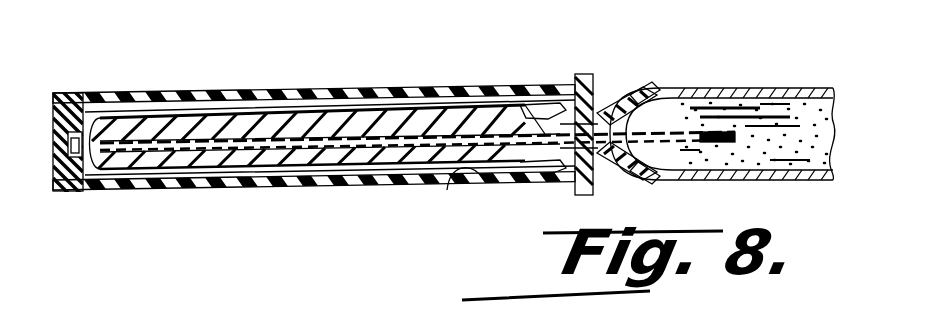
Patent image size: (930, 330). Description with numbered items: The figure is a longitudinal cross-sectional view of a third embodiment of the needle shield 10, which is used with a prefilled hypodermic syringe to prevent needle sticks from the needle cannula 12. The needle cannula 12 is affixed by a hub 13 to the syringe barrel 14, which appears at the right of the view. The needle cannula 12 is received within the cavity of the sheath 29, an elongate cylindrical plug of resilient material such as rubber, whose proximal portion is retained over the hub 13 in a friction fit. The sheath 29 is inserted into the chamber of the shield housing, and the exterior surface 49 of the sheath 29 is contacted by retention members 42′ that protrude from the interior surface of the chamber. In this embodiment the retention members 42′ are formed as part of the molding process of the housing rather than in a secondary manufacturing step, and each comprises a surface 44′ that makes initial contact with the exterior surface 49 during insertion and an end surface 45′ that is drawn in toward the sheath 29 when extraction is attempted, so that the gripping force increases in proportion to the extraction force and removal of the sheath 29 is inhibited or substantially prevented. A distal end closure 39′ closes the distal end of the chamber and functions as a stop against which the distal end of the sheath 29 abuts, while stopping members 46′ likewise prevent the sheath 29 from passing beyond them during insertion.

The needle shield 10 is at (323, 193).
The needle cannula 12 is at (518, 100).
The hub 13 is at (634, 94).
The syringe barrel 14 is at (736, 90).
The sheath 29 is at (398, 97).
The distal end closure 39′ is at (43, 125).
The retention member 42′ is at (203, 110).
The surface of retention member 44′ is at (498, 190).
The end surface of retention member 45′ is at (185, 110).
The stopping member 46′ is at (87, 192).
The exterior surface of sheath 49 is at (258, 110).